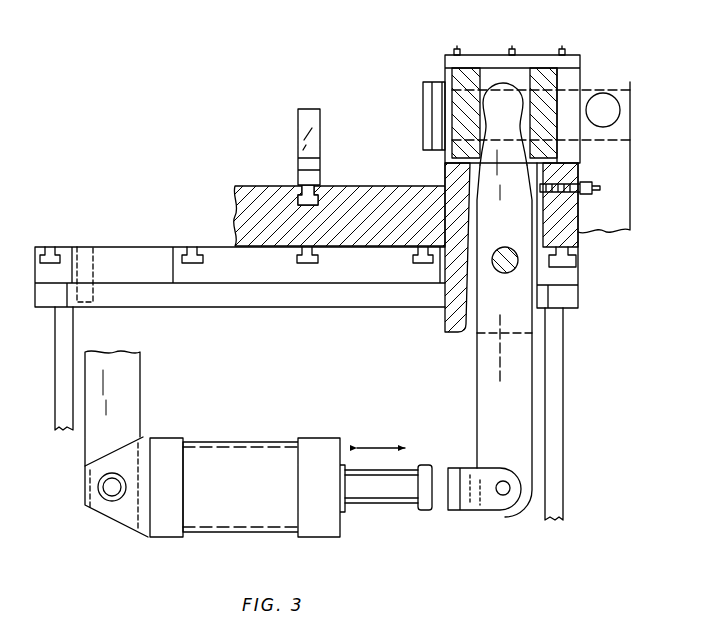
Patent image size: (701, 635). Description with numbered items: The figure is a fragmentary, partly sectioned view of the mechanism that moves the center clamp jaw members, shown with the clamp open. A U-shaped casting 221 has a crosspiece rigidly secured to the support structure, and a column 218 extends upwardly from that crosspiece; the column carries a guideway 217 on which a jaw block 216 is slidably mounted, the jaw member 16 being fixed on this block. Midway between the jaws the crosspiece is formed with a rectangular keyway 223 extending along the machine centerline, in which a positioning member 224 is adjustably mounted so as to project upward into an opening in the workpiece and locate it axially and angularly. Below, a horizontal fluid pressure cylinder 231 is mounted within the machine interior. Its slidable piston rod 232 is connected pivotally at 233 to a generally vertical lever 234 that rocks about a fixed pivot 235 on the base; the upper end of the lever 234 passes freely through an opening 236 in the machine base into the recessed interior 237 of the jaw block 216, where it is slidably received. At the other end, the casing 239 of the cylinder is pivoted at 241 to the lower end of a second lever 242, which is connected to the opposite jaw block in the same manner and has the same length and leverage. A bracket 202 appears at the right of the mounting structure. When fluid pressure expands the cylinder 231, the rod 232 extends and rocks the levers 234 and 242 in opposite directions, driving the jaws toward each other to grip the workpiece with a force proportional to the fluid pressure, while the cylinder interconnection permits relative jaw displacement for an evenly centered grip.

The jaw member 16 is at (428, 107).
The support bracket 202 is at (569, 230).
The jaw block 216 is at (551, 82).
The guideways 217 is at (572, 117).
The column 218 is at (543, 61).
The U-shaped casting 221 is at (363, 200).
The rectangular keyway 223 is at (252, 212).
The positioning member 224 is at (320, 146).
The fluid pressure cylinder 231 is at (259, 454).
The piston rod 232 is at (395, 503).
The pivotal connection 233 is at (511, 487).
The lever 234 is at (570, 407).
The fixed pivot 235 is at (505, 250).
The opening 236 is at (470, 209).
The recessed interior 237 is at (522, 70).
The casing 239 is at (168, 533).
The pivot 241 is at (110, 495).
The lever 242 is at (130, 391).